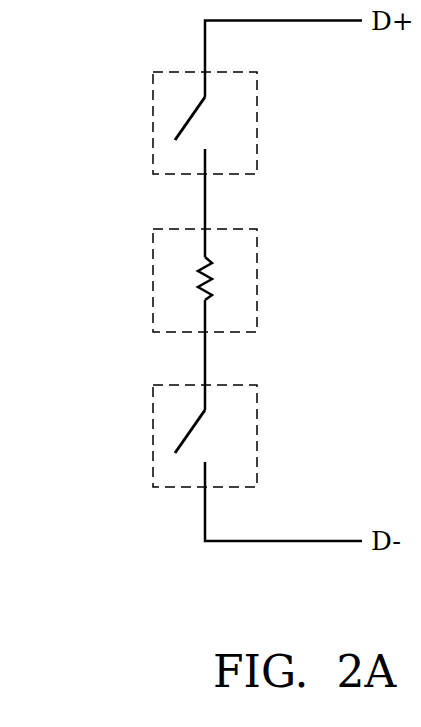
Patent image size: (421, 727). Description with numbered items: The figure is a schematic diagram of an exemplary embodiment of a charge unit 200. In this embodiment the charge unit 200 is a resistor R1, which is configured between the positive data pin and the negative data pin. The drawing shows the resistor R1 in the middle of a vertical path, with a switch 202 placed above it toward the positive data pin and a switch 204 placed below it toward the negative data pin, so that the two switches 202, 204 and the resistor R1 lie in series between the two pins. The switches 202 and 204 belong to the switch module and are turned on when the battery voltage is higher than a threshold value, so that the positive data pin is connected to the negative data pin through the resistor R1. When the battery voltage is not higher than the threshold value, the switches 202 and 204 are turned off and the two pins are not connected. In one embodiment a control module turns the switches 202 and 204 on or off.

The switch 202 is at (150, 124).
The charge unit 200 is at (150, 281).
The switch 204 is at (150, 437).
The resistor R1 is at (213, 283).